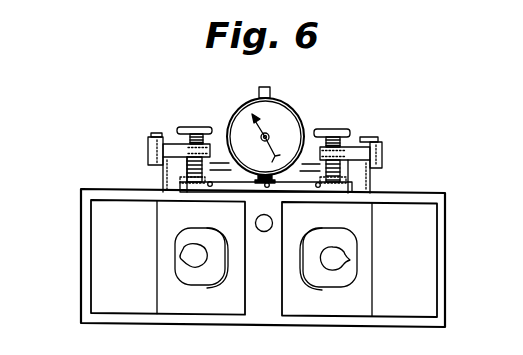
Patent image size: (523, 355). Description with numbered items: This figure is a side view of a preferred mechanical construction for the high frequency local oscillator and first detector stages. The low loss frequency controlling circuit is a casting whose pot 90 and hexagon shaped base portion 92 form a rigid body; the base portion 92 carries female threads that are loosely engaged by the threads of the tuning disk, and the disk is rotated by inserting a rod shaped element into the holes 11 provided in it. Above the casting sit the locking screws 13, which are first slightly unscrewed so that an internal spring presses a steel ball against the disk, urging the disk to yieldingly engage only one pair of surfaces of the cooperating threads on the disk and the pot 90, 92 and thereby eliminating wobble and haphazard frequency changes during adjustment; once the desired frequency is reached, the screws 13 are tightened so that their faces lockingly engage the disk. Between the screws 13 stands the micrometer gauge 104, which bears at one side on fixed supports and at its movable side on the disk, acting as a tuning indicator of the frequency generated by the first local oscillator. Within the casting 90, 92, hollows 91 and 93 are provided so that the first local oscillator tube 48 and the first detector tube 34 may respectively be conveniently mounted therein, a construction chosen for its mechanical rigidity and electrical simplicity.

The micrometer gauge 104 is at (242, 107).
The locking screws 13 is at (186, 127).
The pot 90 is at (81, 233).
The hexagon shaped base portion 92 is at (133, 323).
The holes 11 is at (253, 190).
The hollow 91 is at (227, 272).
The hollow 93 is at (308, 270).
The first local oscillator tube 48 is at (203, 268).
The first detector tube 34 is at (333, 272).